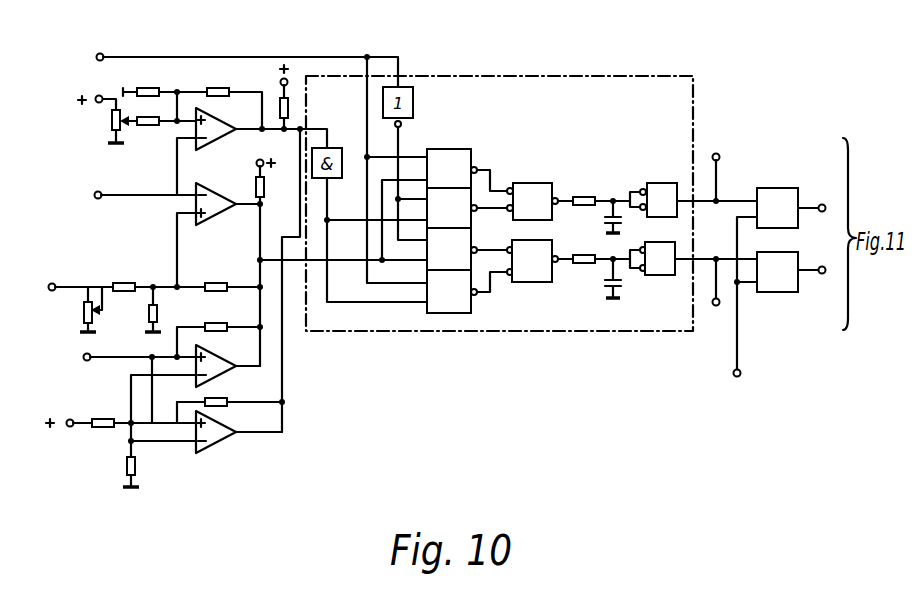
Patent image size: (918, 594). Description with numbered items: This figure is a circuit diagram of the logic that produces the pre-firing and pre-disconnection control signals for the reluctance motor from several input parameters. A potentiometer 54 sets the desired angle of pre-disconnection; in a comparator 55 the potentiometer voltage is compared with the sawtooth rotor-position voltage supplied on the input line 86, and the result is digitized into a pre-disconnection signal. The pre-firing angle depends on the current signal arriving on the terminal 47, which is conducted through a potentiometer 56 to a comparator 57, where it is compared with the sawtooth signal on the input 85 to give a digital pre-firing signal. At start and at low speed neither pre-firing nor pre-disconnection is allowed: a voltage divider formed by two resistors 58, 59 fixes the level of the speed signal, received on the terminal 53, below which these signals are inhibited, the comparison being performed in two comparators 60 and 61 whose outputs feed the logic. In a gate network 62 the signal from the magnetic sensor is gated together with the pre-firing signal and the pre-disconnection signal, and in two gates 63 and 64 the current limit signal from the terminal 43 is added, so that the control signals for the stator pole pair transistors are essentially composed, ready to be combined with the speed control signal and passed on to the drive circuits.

The input signal line from Fig. 8 86 is at (103, 53).
The potentiometer 54 is at (107, 120).
The comparator 55 is at (217, 147).
The input signal line from Fig. 8 85 is at (95, 194).
The comparator 57 is at (210, 219).
The terminal 47 is at (52, 283).
The potentiometer 56 is at (74, 317).
The terminal 53 is at (84, 357).
The resistor 58 is at (102, 432).
The resistor 59 is at (137, 466).
The comparator 60 is at (217, 377).
The comparator 61 is at (215, 446).
The gate network 62 is at (548, 333).
The gate 63 is at (822, 204).
The gate 64 is at (822, 274).
The terminal 43 is at (740, 377).